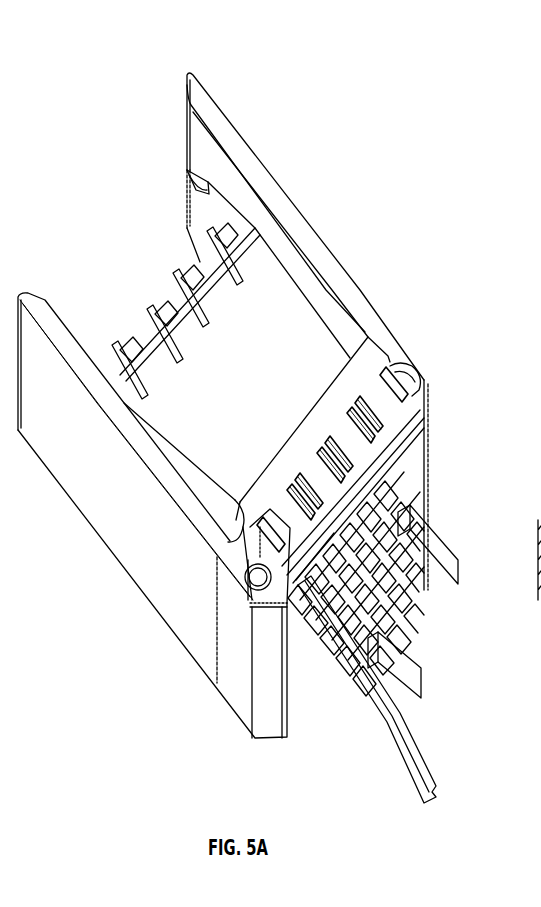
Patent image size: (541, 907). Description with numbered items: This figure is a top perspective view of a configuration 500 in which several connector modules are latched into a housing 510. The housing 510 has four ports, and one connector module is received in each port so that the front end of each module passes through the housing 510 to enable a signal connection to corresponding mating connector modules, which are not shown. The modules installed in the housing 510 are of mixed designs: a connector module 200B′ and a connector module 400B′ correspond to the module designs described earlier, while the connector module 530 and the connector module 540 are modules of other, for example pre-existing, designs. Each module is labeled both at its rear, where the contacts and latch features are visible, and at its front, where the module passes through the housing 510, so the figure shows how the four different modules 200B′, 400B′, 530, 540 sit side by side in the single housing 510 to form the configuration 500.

The configuration 500 is at (308, 55).
The housing 510 is at (313, 230).
The connector module of other design 540 is at (191, 226).
The connector module of other design 530 is at (164, 258).
The connector module 400B′ is at (137, 287).
The connector module 200B′ is at (107, 340).